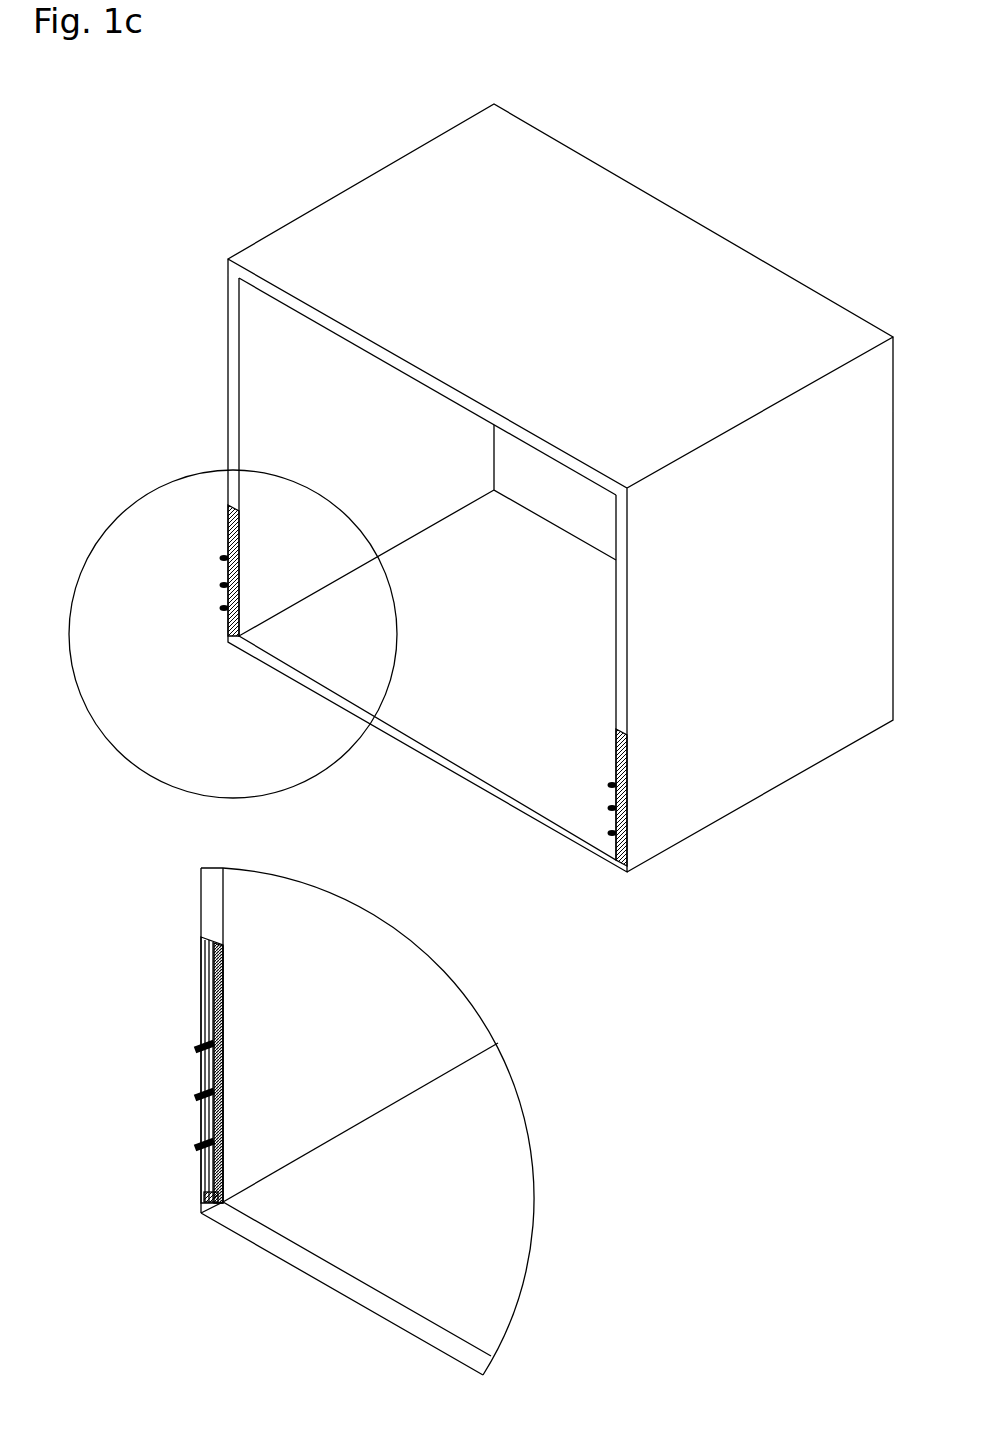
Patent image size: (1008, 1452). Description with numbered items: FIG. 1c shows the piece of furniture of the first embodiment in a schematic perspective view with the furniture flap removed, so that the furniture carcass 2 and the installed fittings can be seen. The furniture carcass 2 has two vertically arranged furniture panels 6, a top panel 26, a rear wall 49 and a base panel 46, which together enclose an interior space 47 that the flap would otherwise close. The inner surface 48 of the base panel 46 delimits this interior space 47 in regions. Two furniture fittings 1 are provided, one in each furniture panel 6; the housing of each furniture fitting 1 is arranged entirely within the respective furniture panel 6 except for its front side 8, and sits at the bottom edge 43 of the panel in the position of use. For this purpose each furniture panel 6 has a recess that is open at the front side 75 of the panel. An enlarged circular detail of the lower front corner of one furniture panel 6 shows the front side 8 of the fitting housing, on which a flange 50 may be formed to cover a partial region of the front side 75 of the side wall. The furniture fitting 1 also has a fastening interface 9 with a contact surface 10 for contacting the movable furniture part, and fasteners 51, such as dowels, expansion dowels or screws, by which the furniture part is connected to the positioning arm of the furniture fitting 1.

The furniture fitting 1 is at (155, 1060).
The furniture carcass 2 is at (687, 245).
The furniture panel 6 is at (230, 375).
The front side 8 is at (200, 965).
The fastening interface 9 is at (188, 1090).
The contact surface 10 is at (200, 1117).
The top panel 26 is at (577, 185).
The bottom edge 43 is at (313, 1156).
The base panel 46 is at (507, 1240).
The interior space 47 is at (272, 440).
The inner surface 48 is at (485, 1301).
The rear wall 49 is at (542, 482).
The flange 50 is at (208, 1007).
The fastener 51 is at (197, 1148).
The front side 75 is at (210, 907).